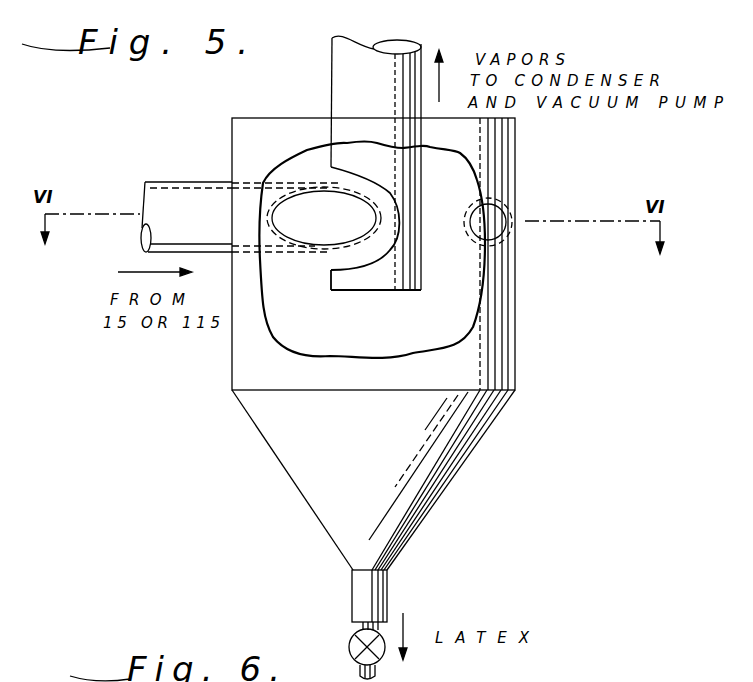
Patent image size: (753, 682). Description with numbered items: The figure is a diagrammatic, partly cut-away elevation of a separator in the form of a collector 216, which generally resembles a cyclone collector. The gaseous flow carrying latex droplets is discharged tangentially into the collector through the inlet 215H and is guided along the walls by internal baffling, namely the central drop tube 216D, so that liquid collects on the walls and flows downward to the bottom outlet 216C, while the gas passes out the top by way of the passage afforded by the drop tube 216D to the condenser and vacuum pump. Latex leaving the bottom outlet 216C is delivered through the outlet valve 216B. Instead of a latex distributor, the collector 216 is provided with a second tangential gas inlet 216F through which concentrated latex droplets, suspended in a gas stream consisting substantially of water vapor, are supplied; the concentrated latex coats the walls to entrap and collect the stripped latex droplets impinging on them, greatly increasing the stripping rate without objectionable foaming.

The collector 216 is at (490, 360).
The drop tube 216D is at (345, 90).
The inlet 215H is at (203, 160).
The second tangential gas inlet 216F is at (478, 222).
The bottom outlet 216C is at (387, 586).
The outlet valve 216B is at (358, 647).